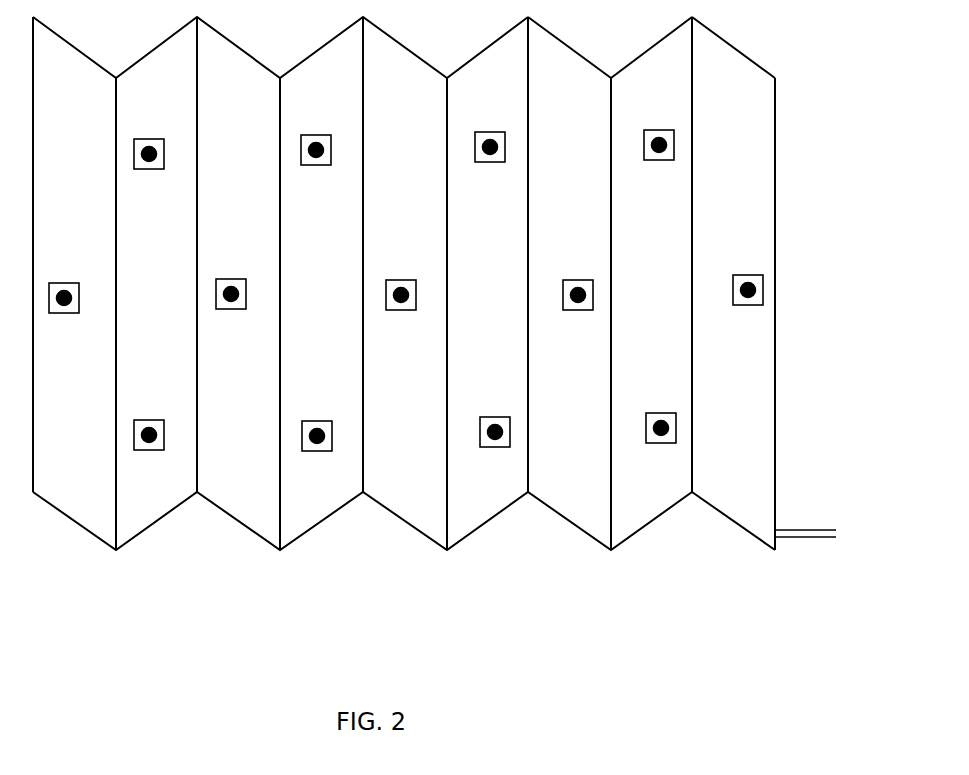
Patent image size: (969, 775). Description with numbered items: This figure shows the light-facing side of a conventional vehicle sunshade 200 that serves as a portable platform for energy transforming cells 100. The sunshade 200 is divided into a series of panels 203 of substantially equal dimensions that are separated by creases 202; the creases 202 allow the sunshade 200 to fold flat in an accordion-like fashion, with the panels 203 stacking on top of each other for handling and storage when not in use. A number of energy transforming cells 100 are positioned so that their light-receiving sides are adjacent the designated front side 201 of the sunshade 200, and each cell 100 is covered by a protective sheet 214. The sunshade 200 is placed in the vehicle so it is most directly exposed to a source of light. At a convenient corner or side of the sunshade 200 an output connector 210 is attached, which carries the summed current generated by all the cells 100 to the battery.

The energy transforming cell 100 is at (64, 313).
The sunshade 200 is at (429, 283).
The front side 201 is at (743, 170).
The crease 202 is at (611, 108).
The panel 203 is at (565, 48).
The output connector 210 is at (790, 528).
The protective sheet 214 is at (136, 139).